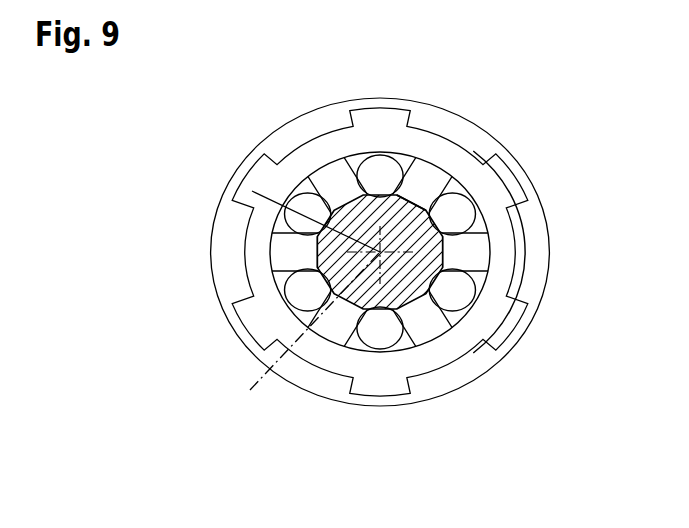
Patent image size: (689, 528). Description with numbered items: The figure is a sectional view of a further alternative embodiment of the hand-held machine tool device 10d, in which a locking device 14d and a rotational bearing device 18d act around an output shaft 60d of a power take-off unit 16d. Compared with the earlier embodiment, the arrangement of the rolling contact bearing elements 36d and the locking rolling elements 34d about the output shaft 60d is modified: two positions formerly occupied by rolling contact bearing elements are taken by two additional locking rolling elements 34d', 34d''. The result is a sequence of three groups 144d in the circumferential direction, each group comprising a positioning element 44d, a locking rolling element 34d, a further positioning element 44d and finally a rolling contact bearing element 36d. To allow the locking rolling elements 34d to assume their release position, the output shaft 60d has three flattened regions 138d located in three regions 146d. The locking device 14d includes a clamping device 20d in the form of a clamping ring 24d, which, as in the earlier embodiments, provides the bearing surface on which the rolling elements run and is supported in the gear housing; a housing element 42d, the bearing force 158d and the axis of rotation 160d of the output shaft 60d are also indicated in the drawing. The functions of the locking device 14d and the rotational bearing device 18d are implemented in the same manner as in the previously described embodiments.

The hand-held machine tool device 10d is at (526, 98).
The locking device 14d is at (367, 148).
The power take-off unit 16d is at (442, 272).
The rotational bearing device 18d is at (385, 361).
The clamping device 20d is at (322, 352).
The clamping ring 24d is at (326, 358).
The locking rolling element 34d is at (365, 115).
The additional locking rolling element 34d' is at (526, 333).
The additional locking rolling element 34d'' is at (226, 326).
The rolling contact bearing element 36d is at (460, 213).
The housing 42d is at (222, 255).
The positioning element 44d is at (450, 310).
The output shaft 60d is at (458, 298).
The flattened region 138d is at (391, 188).
The group 144d is at (405, 193).
The region 146d is at (455, 170).
The spring element 158d is at (274, 190).
The axis line 160d is at (287, 334).